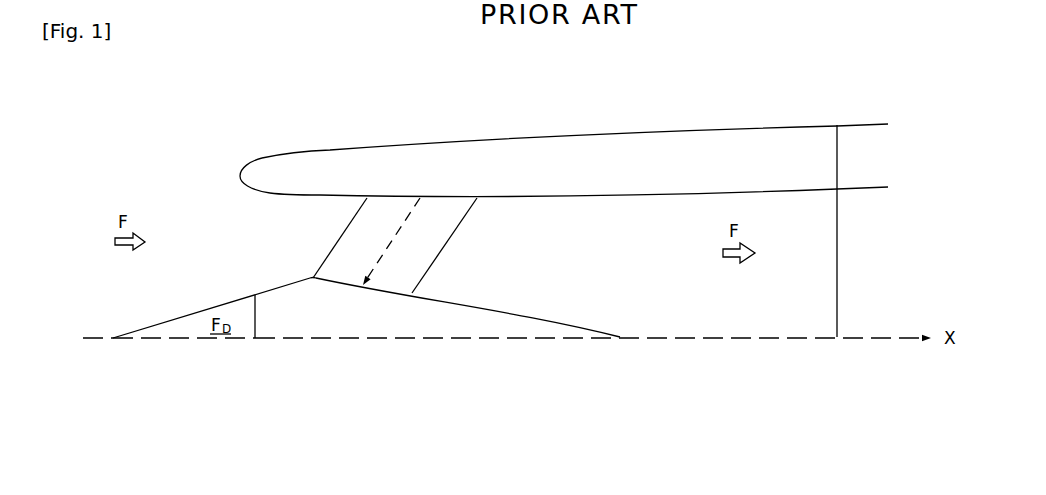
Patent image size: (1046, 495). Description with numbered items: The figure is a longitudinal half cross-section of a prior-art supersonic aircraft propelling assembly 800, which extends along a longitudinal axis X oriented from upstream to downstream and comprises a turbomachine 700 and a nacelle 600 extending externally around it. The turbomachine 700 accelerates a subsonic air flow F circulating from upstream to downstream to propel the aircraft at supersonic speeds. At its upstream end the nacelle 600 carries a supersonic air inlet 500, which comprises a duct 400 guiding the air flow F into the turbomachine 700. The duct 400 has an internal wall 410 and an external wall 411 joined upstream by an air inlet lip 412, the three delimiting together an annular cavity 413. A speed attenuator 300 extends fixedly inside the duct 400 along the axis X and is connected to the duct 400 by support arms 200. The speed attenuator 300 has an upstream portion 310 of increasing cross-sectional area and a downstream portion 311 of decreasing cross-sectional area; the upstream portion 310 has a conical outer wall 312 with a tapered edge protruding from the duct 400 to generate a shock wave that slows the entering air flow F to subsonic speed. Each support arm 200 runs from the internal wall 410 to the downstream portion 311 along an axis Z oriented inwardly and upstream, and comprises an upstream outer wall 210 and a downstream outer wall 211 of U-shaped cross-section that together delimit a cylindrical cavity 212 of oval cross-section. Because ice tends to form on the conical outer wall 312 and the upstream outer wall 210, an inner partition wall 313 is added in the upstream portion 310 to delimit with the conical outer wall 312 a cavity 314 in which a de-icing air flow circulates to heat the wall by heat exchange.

The support arm 200 is at (440, 274).
The upstream outer wall 210 is at (327, 255).
The downstream outer wall 211 is at (447, 248).
The cylindrical cavity 212 is at (377, 254).
The speed attenuator 300 is at (120, 348).
The upstream portion 310 is at (308, 393).
The downstream portion 311 is at (627, 353).
The conical outer wall 312 is at (153, 323).
The inner partition wall 313 is at (255, 340).
The cavity 314 is at (187, 348).
The duct 400 is at (392, 143).
The internal wall 410 is at (302, 193).
The external wall 411 is at (328, 150).
The air inlet lip 412 is at (240, 175).
The annular cavity 413 is at (387, 184).
The supersonic air inlet 500 is at (768, 125).
The nacelle 600 is at (860, 196).
The turbomachine 700 is at (886, 322).
The supersonic aircraft propelling assembly 800 is at (890, 240).